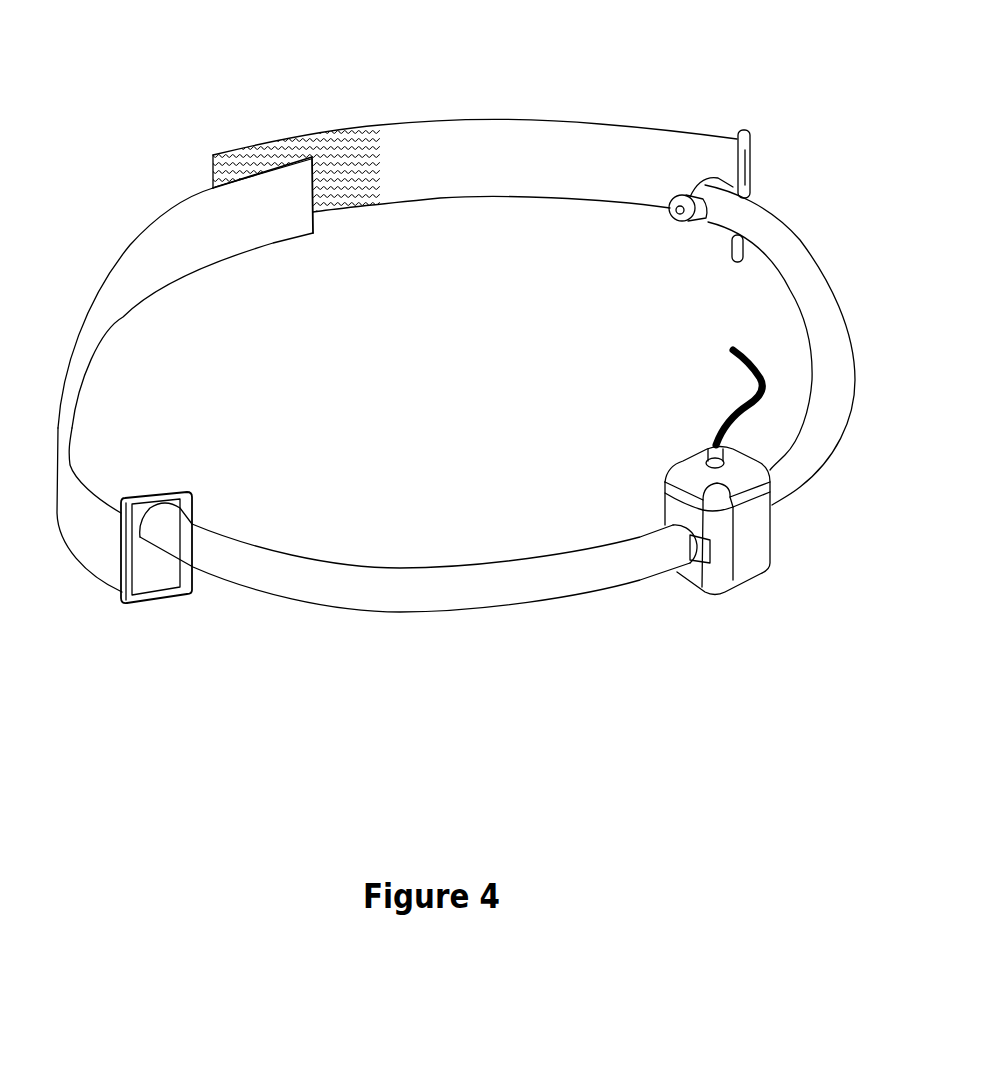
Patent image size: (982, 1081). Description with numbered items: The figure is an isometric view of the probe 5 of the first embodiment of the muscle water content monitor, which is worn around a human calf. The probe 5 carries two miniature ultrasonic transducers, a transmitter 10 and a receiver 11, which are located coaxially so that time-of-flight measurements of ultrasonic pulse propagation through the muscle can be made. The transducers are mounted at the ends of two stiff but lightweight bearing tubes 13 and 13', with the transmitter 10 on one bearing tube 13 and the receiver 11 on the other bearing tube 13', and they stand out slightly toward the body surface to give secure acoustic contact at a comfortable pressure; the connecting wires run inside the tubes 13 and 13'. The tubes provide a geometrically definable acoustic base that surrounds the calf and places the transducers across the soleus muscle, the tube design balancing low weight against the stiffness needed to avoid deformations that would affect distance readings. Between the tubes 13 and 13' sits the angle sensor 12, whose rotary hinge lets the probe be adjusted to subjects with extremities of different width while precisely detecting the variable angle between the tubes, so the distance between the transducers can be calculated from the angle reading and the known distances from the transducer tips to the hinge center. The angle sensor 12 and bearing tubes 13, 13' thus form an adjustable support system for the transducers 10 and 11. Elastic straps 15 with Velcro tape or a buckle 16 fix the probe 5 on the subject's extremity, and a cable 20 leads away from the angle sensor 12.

The probe 5 is at (610, 642).
The transmitter 10 is at (157, 527).
The receiver 11 is at (672, 212).
The angle sensor 12 is at (752, 537).
The bearing tube 13 is at (418, 605).
The bearing tube 13' is at (792, 360).
The elastic straps 15 is at (517, 162).
The Velcro tape or buckle 16 is at (335, 163).
The cable 20 is at (712, 422).